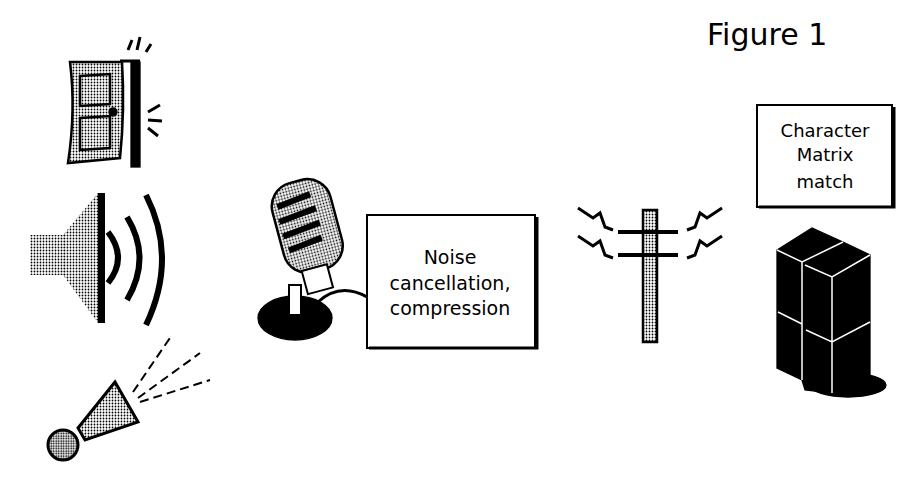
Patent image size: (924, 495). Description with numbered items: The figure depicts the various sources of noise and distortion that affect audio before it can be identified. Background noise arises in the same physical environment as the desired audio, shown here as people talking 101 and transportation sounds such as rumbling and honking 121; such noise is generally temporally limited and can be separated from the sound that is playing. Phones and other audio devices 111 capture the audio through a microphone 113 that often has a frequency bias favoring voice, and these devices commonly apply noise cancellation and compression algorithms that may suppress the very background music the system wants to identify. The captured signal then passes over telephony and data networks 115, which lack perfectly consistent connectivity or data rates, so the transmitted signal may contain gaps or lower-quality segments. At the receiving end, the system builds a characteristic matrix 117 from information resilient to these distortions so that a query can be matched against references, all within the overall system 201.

The people talking 101 is at (177, 100).
The audio devices 111 is at (158, 218).
The microphone 113 is at (310, 183).
The telephony and data networks 115 is at (640, 213).
The characteristic matrix 117 is at (790, 372).
The rumbling and honking 121 is at (80, 452).
The system 201 is at (357, 494).